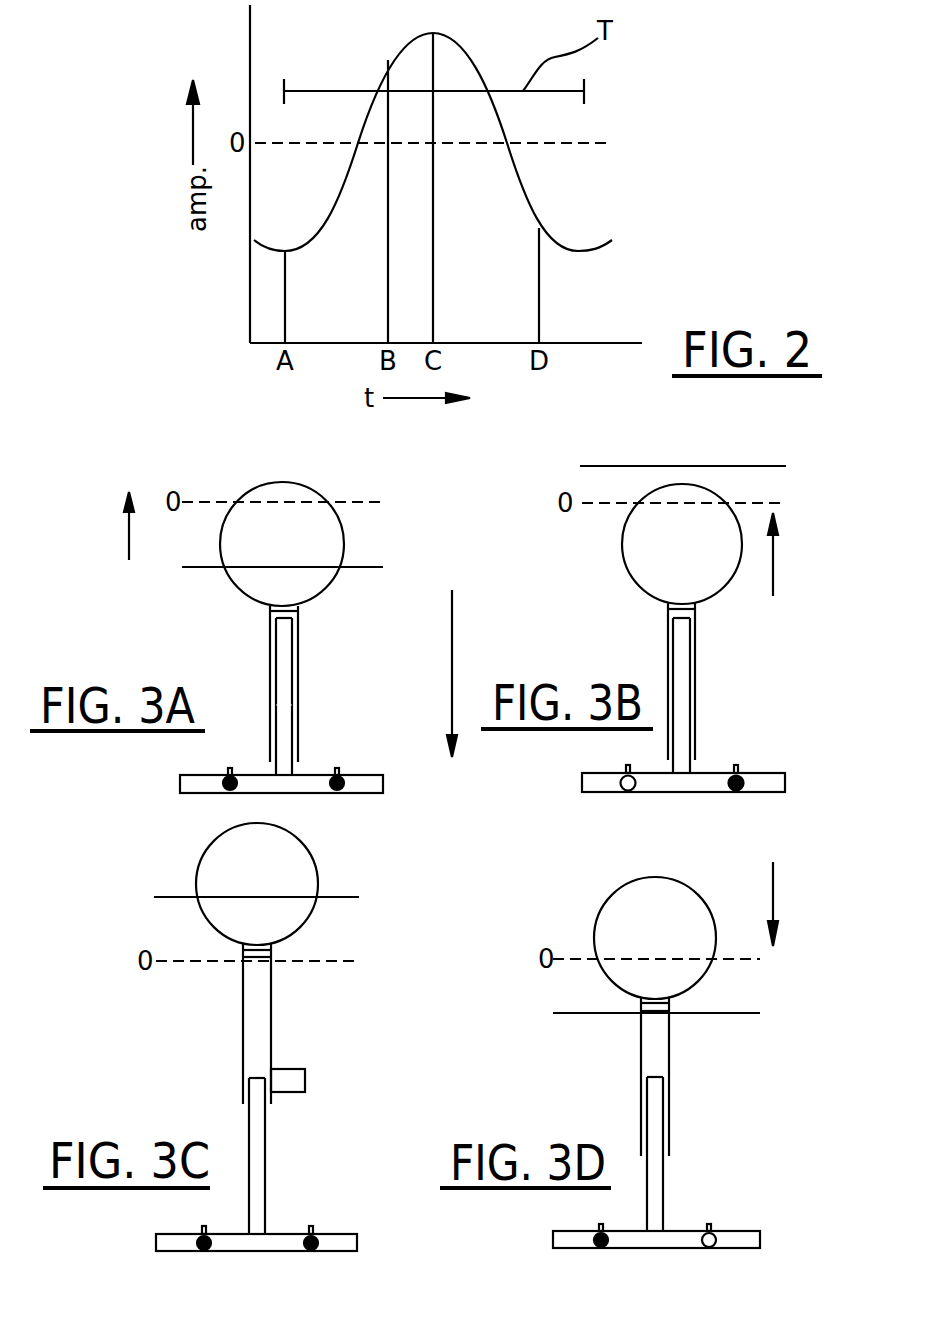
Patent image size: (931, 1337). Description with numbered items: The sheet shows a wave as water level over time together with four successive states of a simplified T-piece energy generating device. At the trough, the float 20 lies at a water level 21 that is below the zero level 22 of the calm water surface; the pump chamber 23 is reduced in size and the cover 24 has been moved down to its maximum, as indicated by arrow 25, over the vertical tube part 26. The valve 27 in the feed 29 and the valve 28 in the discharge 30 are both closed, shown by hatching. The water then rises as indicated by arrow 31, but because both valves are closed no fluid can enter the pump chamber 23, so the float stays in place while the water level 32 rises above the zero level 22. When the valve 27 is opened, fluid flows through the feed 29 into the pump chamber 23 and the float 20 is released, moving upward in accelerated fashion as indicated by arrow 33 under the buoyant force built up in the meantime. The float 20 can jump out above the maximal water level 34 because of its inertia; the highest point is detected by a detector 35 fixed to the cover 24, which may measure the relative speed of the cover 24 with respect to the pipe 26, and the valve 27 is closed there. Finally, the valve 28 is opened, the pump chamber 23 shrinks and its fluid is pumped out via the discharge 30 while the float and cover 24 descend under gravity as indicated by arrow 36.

In FIG. 3A, the float 20 is at (332, 537).
In FIG. 3B, the float 20 is at (641, 580).
In FIG. 3C, the float 20 is at (298, 874).
In FIG. 3A, the water level 21 is at (205, 570).
In FIG. 3A, the zero level 22 is at (212, 502).
In FIG. 3B, the zero level 22 is at (604, 505).
In FIG. 3A, the pump chamber 23 is at (298, 612).
In FIG. 3B, the pump chamber 23 is at (695, 615).
In FIG. 3C, the pump chamber 23 is at (252, 990).
In FIG. 3D, the pump chamber 23 is at (655, 1037).
In FIG. 3A, the cover 24 is at (298, 657).
In FIG. 3C, the cover 24 is at (271, 1038).
In FIG. 3A, the arrow 25 is at (455, 656).
In FIG. 3A, the vertical tube part 26 is at (285, 705).
In FIG. 3A, the valve 27 is at (230, 776).
In FIG. 3B, the valve 27 is at (628, 792).
In FIG. 3C, the valve 27 is at (202, 1252).
In FIG. 3A, the valve 28 is at (342, 790).
In FIG. 3D, the valve 28 is at (712, 1235).
In FIG. 3A, the feed 29 is at (185, 785).
In FIG. 3B, the feed 29 is at (599, 795).
In FIG. 3A, the discharge 30 is at (365, 780).
In FIG. 3A, the arrow 31 is at (129, 547).
In FIG. 3B, the water level 32 is at (592, 468).
In FIG. 3B, the arrow 33 is at (773, 580).
In FIG. 3C, the water level 34 is at (169, 897).
In FIG. 3C, the detector 35 is at (296, 1084).
In FIG. 3D, the arrow 36 is at (775, 885).